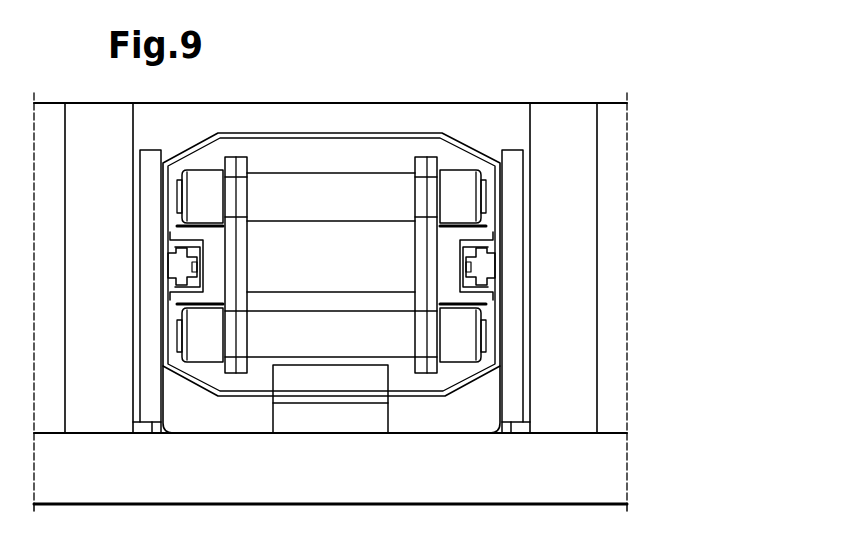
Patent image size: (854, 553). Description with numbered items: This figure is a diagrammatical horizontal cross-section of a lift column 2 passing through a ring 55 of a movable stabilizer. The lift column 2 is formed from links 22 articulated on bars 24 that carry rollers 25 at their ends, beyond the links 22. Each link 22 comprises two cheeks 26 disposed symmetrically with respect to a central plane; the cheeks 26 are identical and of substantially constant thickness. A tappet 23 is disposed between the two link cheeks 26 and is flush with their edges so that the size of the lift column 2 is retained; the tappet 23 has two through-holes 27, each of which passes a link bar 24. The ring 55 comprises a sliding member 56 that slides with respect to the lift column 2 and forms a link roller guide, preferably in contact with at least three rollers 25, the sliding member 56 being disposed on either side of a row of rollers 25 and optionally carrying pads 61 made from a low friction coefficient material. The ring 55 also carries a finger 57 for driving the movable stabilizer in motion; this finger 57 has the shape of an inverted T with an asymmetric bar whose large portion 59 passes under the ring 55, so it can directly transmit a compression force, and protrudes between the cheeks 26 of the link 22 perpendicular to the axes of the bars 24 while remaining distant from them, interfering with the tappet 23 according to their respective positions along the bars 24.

The lift column 2 is at (349, 150).
The link 22 is at (433, 143).
The tappet 23 is at (333, 300).
The bar 24 is at (392, 208).
The roller 25 is at (474, 208).
The cheek 26 is at (242, 375).
The through-hole 27 is at (277, 310).
The ring 55 is at (675, 272).
The sliding member 56 is at (633, 203).
The finger 57 is at (390, 383).
The large portion 59 is at (273, 365).
The pad 61 is at (207, 306).